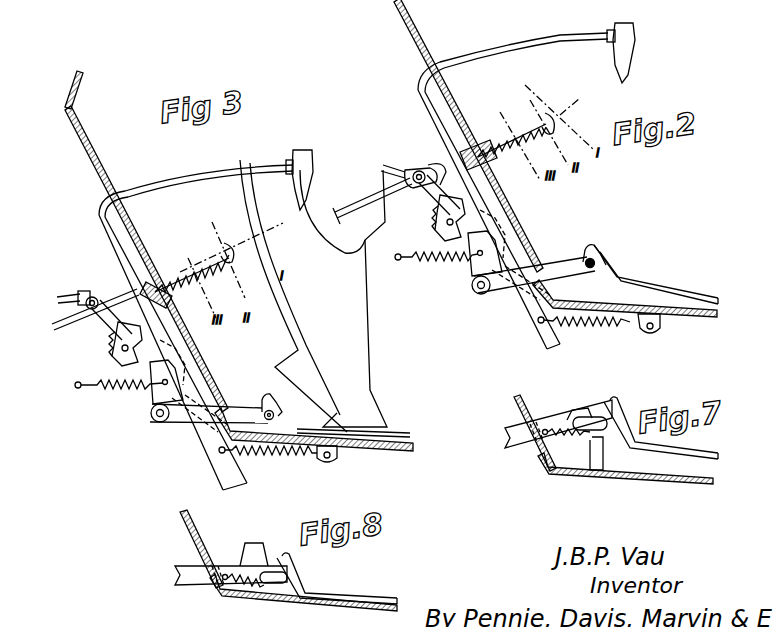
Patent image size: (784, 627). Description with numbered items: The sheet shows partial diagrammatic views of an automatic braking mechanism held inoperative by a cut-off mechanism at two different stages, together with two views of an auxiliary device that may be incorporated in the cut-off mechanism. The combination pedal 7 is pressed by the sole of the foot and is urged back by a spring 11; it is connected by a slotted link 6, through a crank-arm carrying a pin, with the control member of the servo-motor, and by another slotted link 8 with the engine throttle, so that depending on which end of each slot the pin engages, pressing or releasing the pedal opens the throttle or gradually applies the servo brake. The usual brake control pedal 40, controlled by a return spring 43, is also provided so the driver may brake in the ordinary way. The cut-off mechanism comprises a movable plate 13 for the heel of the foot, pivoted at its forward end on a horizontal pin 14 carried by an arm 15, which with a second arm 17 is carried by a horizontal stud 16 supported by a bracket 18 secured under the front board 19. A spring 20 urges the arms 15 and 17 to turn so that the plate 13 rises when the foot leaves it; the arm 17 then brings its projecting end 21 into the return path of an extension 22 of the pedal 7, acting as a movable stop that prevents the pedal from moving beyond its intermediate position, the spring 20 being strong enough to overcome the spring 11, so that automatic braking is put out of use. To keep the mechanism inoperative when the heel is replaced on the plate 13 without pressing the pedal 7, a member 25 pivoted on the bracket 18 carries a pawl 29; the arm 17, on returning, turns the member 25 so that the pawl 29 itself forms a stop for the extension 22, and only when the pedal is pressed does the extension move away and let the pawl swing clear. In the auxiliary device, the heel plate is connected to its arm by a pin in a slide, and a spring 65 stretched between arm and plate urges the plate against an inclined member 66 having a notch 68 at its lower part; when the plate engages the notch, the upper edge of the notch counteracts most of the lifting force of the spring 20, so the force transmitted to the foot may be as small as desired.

In FIG. 3, the slotted link 6 is at (60, 330).
In FIG. 2, the slotted link 6 is at (352, 208).
In FIG. 3, the pedal 7 is at (225, 246).
In FIG. 2, the pedal 7 is at (547, 112).
In FIG. 3, the slotted link 8 is at (77, 295).
In FIG. 2, the slotted link 8 is at (386, 165).
In FIG. 3, the spring 11 is at (178, 268).
In FIG. 2, the spring 11 is at (503, 134).
In FIG. 3, the movable plate 13 is at (380, 440).
In FIG. 2, the movable plate 13 is at (620, 270).
In FIG. 7, the movable plate 13 is at (684, 452).
In FIG. 8, the movable plate 13 is at (333, 596).
In FIG. 3, the horizontal pin 14 is at (266, 412).
In FIG. 2, the horizontal pin 14 is at (586, 258).
In FIG. 3, the arm 15 is at (190, 428).
In FIG. 2, the arm 15 is at (500, 290).
In FIG. 7, the arm 15 is at (517, 438).
In FIG. 8, the arm 15 is at (195, 575).
In FIG. 3, the horizontal stud 16 is at (162, 425).
In FIG. 2, the horizontal stud 16 is at (482, 296).
In FIG. 3, the arm 17 is at (152, 418).
In FIG. 2, the arm 17 is at (473, 290).
In FIG. 3, the bracket 18 is at (192, 360).
In FIG. 2, the bracket 18 is at (494, 211).
In FIG. 3, the front board 19 is at (183, 331).
In FIG. 2, the front board 19 is at (497, 181).
In FIG. 3, the spring 20 is at (100, 387).
In FIG. 2, the spring 20 is at (420, 260).
In FIG. 2, the projecting end 21 is at (433, 178).
In FIG. 3, the extension 22 is at (110, 325).
In FIG. 2, the extension 22 is at (432, 198).
In FIG. 3, the member 25 is at (155, 388).
In FIG. 2, the member 25 is at (475, 262).
In FIG. 3, the pawl 29 is at (118, 342).
In FIG. 2, the pawl 29 is at (440, 212).
In FIG. 3, the brake control pedal 40 is at (301, 160).
In FIG. 2, the brake control pedal 40 is at (626, 42).
In FIG. 3, the return spring 43 is at (266, 455).
In FIG. 2, the return spring 43 is at (594, 328).
In FIG. 7, the spring 65 is at (586, 440).
In FIG. 8, the spring 65 is at (242, 578).
In FIG. 7, the inclined member 66 is at (575, 415).
In FIG. 8, the inclined member 66 is at (258, 558).
In FIG. 7, the notch 68 is at (606, 465).